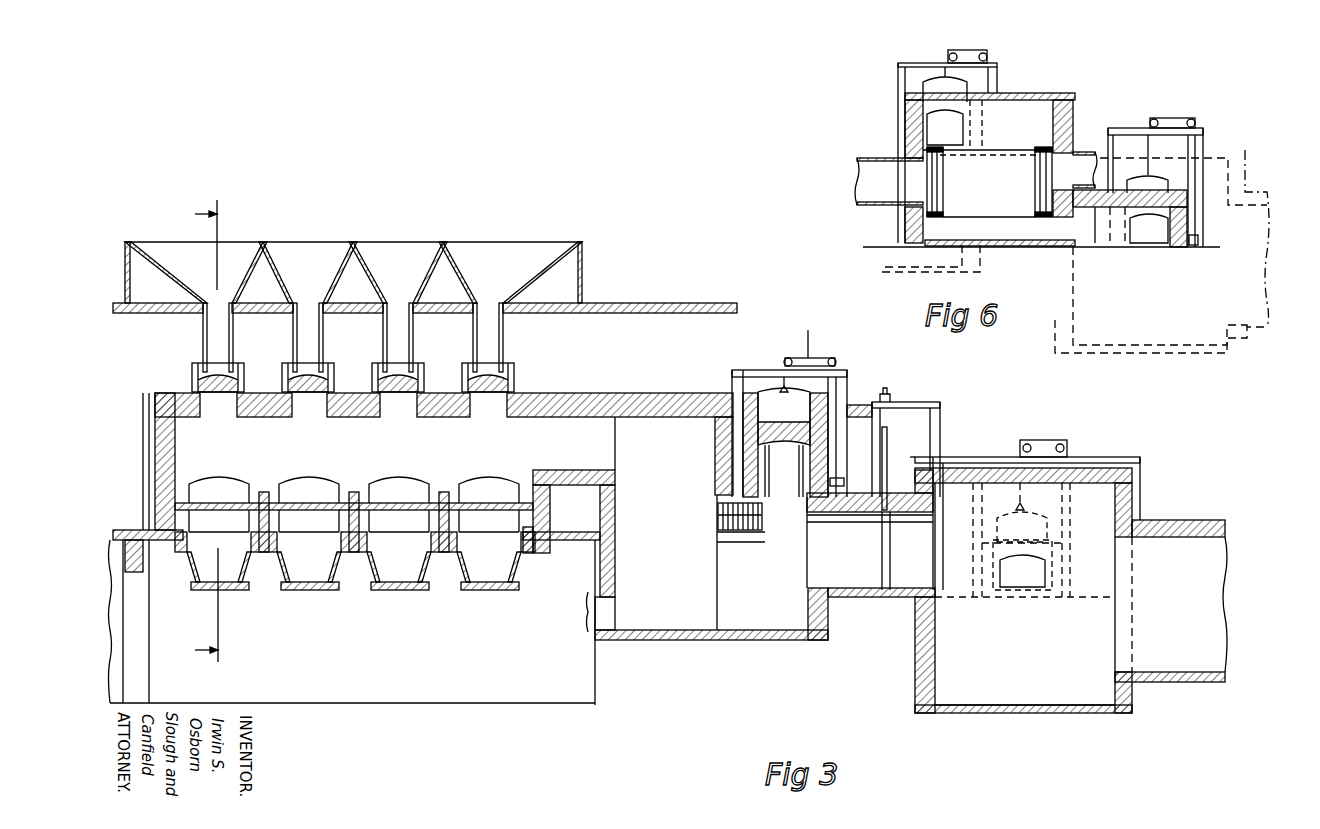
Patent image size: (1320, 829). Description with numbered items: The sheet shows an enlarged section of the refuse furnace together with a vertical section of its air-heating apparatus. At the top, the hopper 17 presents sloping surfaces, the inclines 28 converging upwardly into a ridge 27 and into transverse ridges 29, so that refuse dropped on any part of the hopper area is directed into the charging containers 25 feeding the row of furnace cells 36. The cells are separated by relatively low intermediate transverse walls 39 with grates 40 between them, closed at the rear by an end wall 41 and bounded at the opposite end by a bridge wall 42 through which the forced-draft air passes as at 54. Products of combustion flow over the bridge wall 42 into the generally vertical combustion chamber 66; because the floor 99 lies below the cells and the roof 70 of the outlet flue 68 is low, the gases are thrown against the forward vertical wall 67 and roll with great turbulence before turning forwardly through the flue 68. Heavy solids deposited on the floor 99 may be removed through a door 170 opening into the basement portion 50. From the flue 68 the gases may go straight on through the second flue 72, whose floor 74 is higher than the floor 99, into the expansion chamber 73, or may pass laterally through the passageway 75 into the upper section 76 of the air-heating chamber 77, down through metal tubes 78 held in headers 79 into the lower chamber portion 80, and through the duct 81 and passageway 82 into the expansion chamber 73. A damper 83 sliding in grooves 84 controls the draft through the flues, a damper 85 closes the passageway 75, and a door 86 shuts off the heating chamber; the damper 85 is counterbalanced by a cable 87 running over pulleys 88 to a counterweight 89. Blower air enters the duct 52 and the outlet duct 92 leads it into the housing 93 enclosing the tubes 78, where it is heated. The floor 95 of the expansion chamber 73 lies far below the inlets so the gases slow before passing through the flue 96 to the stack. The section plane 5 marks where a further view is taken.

In FIG. 3, the section plane 5— 5 is at (209, 436).
In FIG. 3, the hopper 17 is at (480, 262).
In FIG. 3, the charging container 25 is at (226, 346).
In FIG. 3, the ridge 27 is at (304, 252).
In FIG. 3, the incline 28 is at (250, 270).
In FIG. 3, the transverse ridge 29 is at (263, 248).
In FIG. 3, the furnace cell 36 is at (223, 480).
In FIG. 3, the intermediate transverse wall 39 is at (264, 492).
In FIG. 3, the grate 40 is at (200, 503).
In FIG. 3, the closing end wall 41 is at (168, 440).
In FIG. 3, the bridge wall 42 is at (544, 470).
In FIG. 3, the basement portion 50 is at (352, 622).
In FIG. 3, the duct portion 54 is at (633, 460).
In FIG. 3, the combustion chamber 66 is at (682, 562).
In FIG. 3, the forward vertical wall 67 is at (722, 470).
In FIG. 3, the outlet flue 68 is at (755, 573).
In FIG. 3, the roof of outlet flue 70 is at (748, 532).
In FIG. 3, the second flue 72 is at (882, 558).
In FIG. 3, the expansion chamber 73 is at (1025, 576).
In FIG. 3, the floor of flue 74 is at (862, 600).
In FIG. 3, the passageway 75 is at (783, 480).
In FIG. 6, the passageway 75 is at (920, 148).
In FIG. 3, the passageway 82 is at (1030, 585).
In FIG. 3, the damper 83 is at (888, 457).
In FIG. 3, the groove 84 is at (886, 522).
In FIG. 3, the damper 85 is at (770, 394).
In FIG. 3, the door 86 is at (1026, 506).
In FIG. 6, the door 86 is at (1152, 183).
In FIG. 3, the cable 87 is at (810, 339).
In FIG. 3, the pulley 88 is at (787, 358).
In FIG. 3, the counterweight 89 is at (850, 490).
In FIG. 3, the floor of expansion chamber 95 is at (1040, 706).
In FIG. 3, the flue 96 is at (1170, 540).
In FIG. 3, the floor of combustion chamber 99 is at (680, 642).
In FIG. 3, the door 170 is at (600, 617).
In FIG. 6, the duct 52 is at (876, 195).
In FIG. 6, the upper section of air-heating chamber 76 is at (1025, 113).
In FIG. 6, the air-heating chamber 77 is at (1075, 116).
In FIG. 6, the metal tube 78 is at (1045, 177).
In FIG. 6, the header 79 is at (1048, 149).
In FIG. 6, the lower chamber portion 80 is at (1000, 236).
In FIG. 6, the duct 81 is at (1153, 232).
In FIG. 6, the outlet duct 92 is at (1085, 158).
In FIG. 6, the housing 93 is at (995, 205).